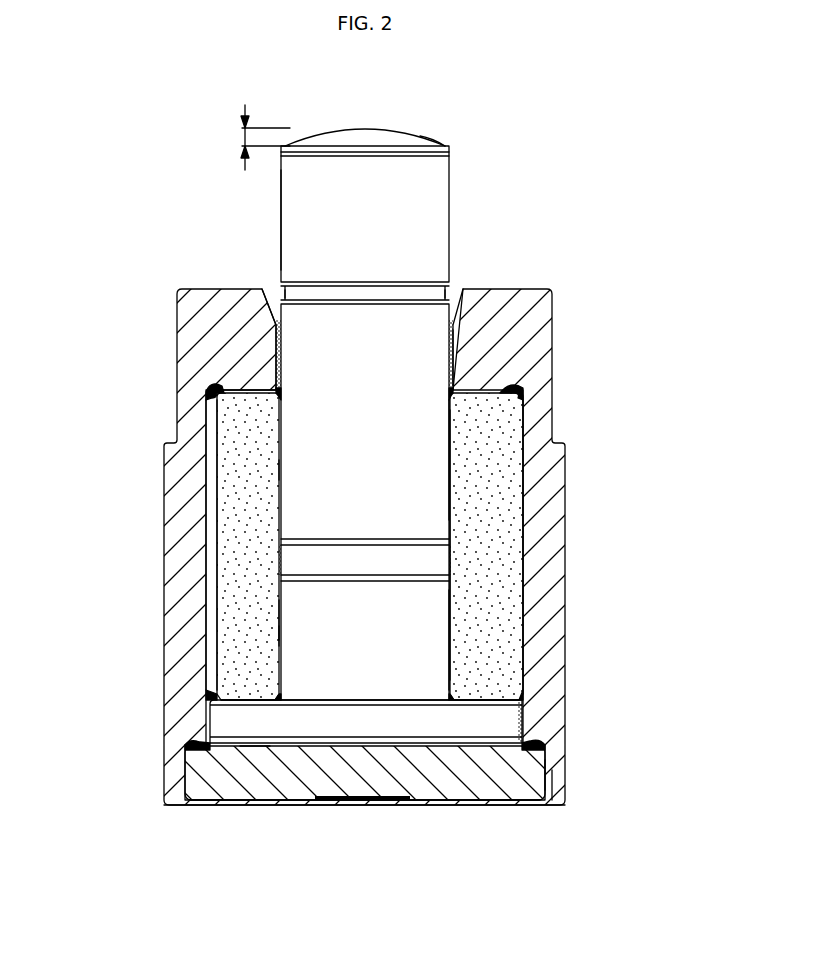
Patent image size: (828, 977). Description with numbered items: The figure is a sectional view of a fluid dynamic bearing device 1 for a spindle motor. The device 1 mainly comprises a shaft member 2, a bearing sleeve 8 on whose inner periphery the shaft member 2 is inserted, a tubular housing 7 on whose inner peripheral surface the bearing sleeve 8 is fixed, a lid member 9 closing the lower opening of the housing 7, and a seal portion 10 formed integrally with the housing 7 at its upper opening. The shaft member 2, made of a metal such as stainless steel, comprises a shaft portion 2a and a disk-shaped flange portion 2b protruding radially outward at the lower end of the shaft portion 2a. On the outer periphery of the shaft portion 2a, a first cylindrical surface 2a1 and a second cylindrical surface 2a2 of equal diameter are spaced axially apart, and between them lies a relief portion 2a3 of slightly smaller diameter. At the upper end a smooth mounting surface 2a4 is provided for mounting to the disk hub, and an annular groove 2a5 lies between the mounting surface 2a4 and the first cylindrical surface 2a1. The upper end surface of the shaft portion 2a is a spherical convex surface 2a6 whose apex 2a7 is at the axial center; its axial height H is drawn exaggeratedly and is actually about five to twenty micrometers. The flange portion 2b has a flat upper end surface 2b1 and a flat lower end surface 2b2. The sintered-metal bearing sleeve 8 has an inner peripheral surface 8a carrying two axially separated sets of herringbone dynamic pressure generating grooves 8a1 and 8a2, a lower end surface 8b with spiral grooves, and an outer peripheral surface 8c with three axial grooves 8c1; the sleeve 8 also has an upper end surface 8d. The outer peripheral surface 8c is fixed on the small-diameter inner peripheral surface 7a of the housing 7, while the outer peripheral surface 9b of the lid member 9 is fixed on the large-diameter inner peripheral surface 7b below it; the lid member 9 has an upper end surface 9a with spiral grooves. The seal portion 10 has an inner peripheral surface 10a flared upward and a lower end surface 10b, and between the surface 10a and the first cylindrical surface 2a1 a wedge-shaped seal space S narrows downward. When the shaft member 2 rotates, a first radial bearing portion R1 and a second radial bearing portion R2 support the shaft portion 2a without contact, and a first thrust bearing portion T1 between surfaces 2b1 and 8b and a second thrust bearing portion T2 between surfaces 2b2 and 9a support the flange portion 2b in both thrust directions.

The fluid dynamic bearing device 1 is at (590, 268).
The shaft member 2 is at (440, 222).
The shaft portion 2a is at (430, 174).
The first cylindrical surface 2a1 is at (455, 420).
The second cylindrical surface 2a2 is at (455, 640).
The relief portion 2a3 is at (455, 556).
The mounting surface 2a4 is at (280, 197).
The annular groove 2a5 is at (405, 290).
The convex surface 2a6 is at (408, 124).
The apex 2a7 is at (364, 126).
The flange portion 2b is at (500, 720).
The upper end surface of flange portion 2b1 is at (480, 700).
The lower end surface of flange portion 2b2 is at (487, 748).
The housing 7 is at (170, 302).
The small-diameter inner peripheral surface 7a is at (522, 612).
The large-diameter inner peripheral surface 7b is at (553, 776).
The bearing sleeve 8 is at (500, 478).
The inner peripheral surface of bearing sleeve 8a is at (452, 486).
The dynamic pressure generating grooves 8a1 is at (280, 410).
The dynamic pressure generating grooves 8a2 is at (280, 622).
The lower end surface of bearing sleeve 8b is at (228, 700).
The outer peripheral surface of bearing sleeve 8c is at (208, 513).
The axial grooves 8c1 is at (216, 549).
The upper end surface of bearing sleeve 8d is at (500, 390).
The lid member 9 is at (475, 776).
The upper end surface of lid member 9a is at (443, 772).
The outer peripheral surface of lid member 9b is at (536, 768).
The seal portion 10 is at (218, 300).
The inner peripheral surface of seal portion 10a is at (447, 322).
The lower end surface of seal portion 10b is at (262, 395).
The seal space S is at (272, 298).
The first radial bearing portion R1 is at (268, 470).
The second radial bearing portion R2 is at (268, 636).
The first thrust bearing portion T1 is at (240, 692).
The second thrust bearing portion T2 is at (244, 757).
The axial height H is at (256, 137).